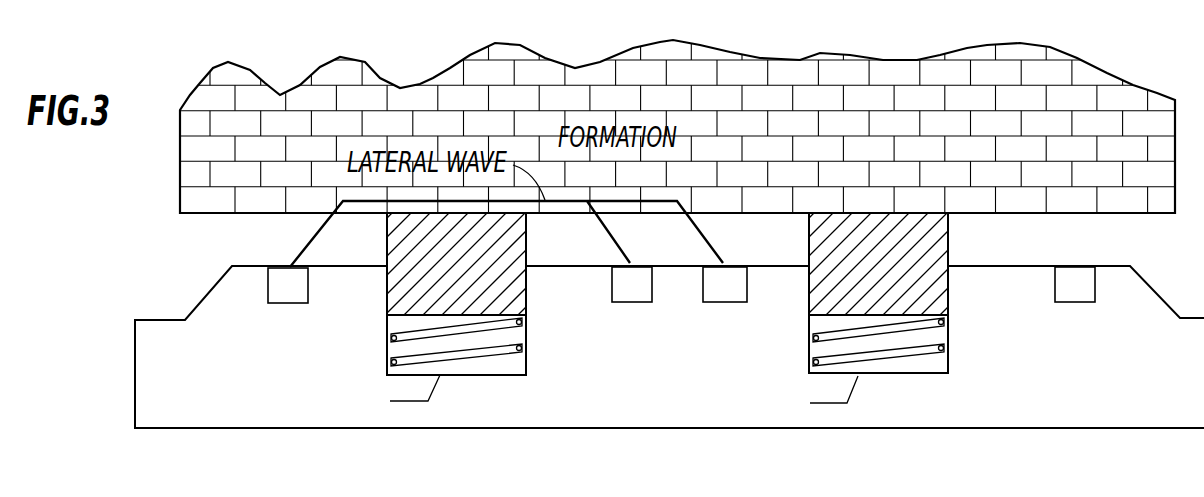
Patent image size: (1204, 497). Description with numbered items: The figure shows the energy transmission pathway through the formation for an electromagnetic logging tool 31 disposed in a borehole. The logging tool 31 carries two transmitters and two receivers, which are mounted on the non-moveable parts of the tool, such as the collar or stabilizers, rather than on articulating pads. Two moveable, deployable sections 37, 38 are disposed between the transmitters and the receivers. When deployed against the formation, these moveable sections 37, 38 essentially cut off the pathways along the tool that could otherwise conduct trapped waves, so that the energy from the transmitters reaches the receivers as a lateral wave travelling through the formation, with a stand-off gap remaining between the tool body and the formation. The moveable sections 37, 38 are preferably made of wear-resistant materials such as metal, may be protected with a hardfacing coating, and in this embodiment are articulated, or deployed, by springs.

The logging tool 31 is at (690, 420).
The moveable section 37 is at (472, 305).
The moveable section 38 is at (894, 305).